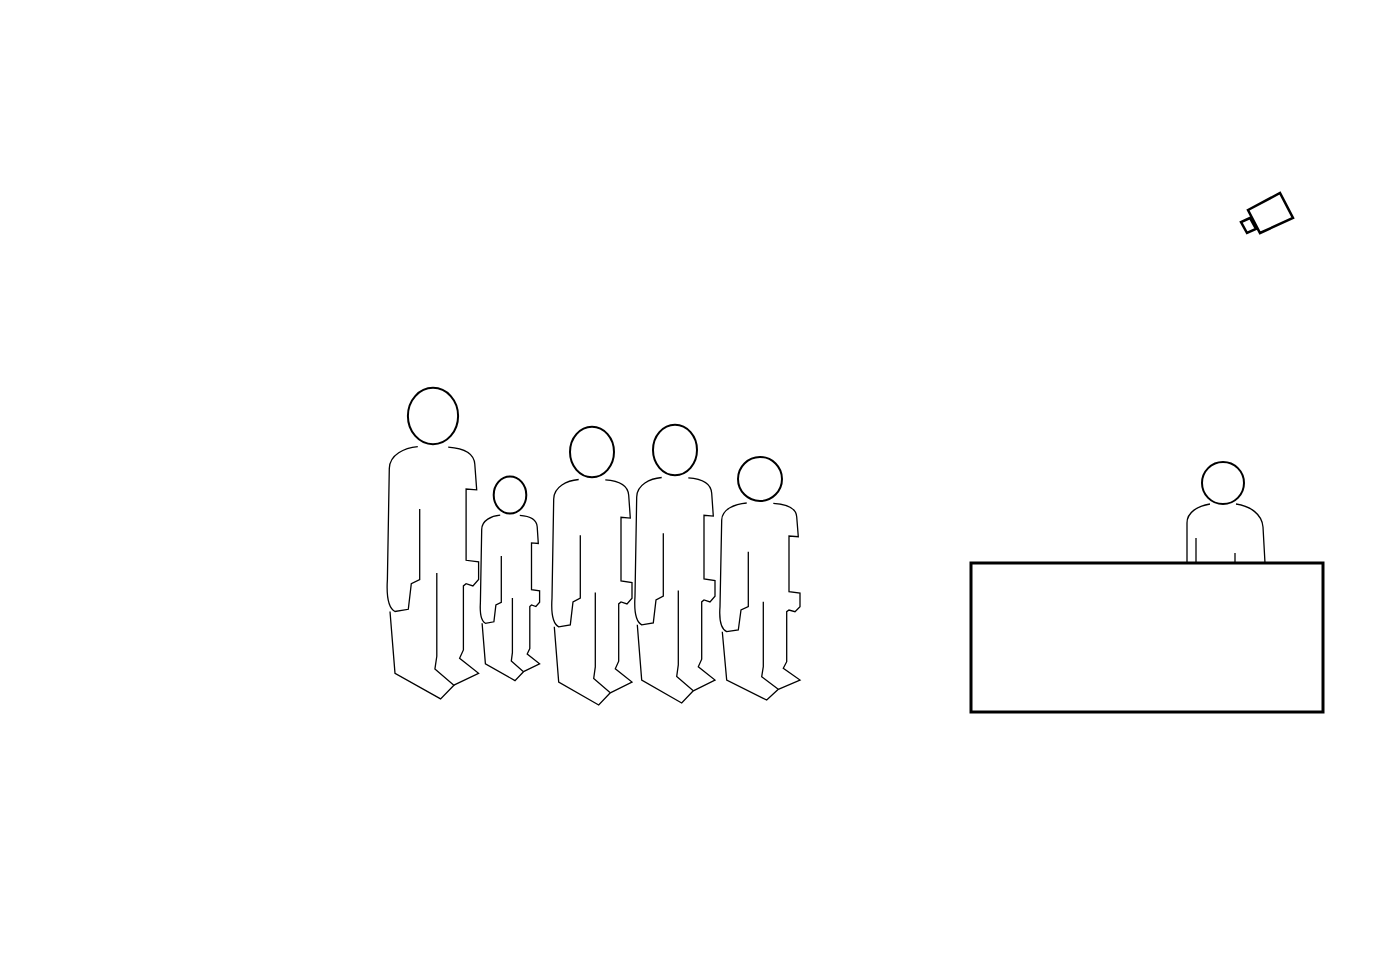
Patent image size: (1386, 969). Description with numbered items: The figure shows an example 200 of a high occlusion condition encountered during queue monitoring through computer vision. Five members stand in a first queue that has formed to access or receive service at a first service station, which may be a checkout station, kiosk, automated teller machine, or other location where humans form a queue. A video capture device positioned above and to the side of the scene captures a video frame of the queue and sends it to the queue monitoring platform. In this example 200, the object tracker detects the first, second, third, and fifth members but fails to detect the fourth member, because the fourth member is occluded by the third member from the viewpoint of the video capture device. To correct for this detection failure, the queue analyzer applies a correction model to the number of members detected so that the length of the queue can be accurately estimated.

The example of a high occlusion condition 200 is at (169, 75).